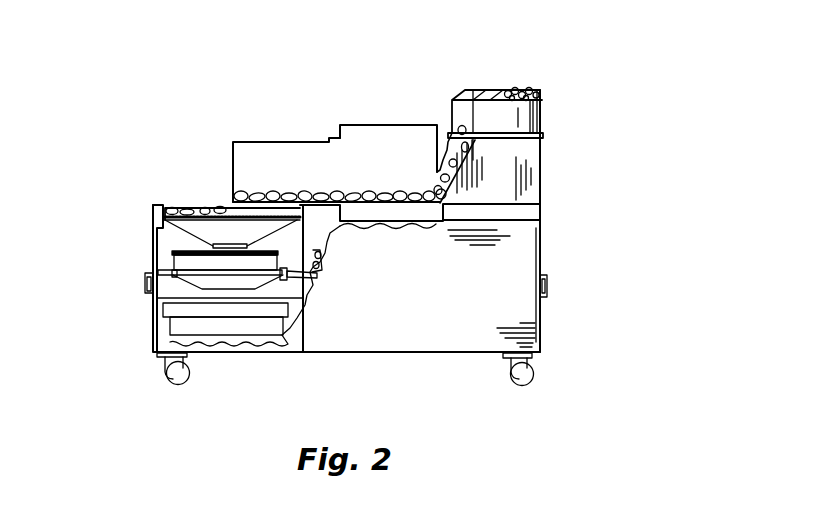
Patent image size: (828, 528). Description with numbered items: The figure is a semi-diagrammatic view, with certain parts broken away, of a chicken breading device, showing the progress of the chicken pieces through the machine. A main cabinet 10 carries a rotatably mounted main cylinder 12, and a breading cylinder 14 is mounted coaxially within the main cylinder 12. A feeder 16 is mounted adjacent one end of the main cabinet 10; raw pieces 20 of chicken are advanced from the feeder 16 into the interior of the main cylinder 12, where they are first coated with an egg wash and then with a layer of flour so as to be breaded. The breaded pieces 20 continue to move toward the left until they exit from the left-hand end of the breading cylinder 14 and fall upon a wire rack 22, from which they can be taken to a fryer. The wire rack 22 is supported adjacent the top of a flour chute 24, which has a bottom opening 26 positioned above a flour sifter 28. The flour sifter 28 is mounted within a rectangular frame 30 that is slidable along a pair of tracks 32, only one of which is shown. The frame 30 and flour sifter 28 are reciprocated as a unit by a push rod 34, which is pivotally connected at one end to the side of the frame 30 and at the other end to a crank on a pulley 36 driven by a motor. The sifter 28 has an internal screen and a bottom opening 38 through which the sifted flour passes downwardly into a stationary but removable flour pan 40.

The main cabinet 10 is at (447, 333).
The main cylinder 12 is at (392, 125).
The breading cylinder 14 is at (273, 148).
The feeder 16 is at (540, 118).
The raw pieces of chicken 20 is at (190, 210).
The wire rack 22 is at (240, 215).
The flour chute 24 is at (212, 244).
The bottom opening 26 is at (212, 249).
The flour sifter 28 is at (185, 260).
The rectangular frame 30 is at (182, 275).
The tracks 32 is at (167, 274).
The push rod 34 is at (305, 297).
The pulley 36 is at (327, 265).
The bottom opening 38 is at (155, 337).
The flour pan 40 is at (238, 332).